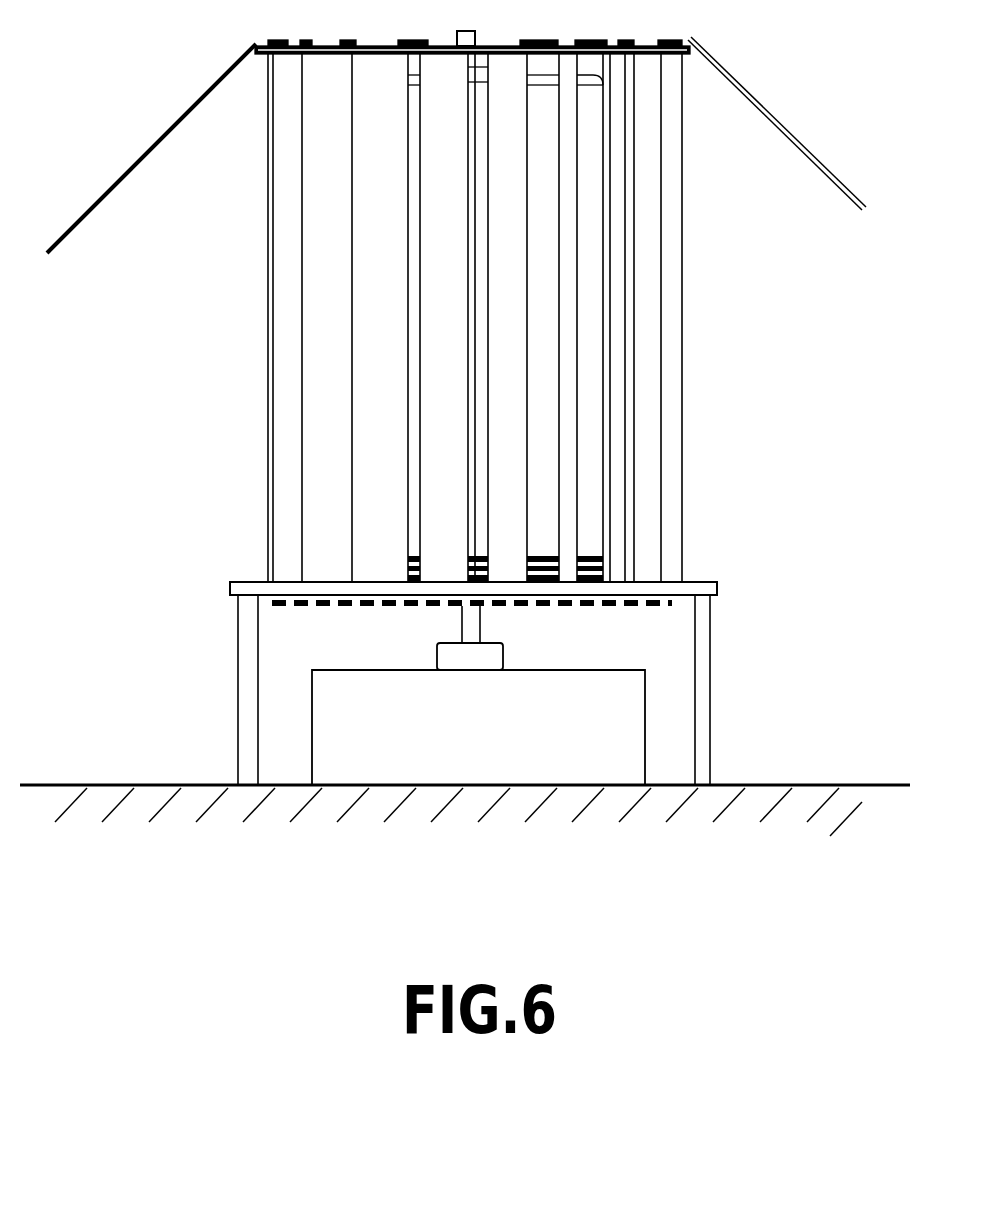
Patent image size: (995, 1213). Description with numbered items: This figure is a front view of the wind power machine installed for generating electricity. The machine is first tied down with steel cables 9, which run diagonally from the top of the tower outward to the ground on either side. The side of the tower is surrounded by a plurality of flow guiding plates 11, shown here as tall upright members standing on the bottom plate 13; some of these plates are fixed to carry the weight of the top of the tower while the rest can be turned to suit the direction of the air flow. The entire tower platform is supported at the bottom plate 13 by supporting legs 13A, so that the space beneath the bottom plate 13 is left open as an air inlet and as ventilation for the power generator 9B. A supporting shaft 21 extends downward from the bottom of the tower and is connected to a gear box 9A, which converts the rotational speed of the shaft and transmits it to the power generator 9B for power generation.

The steel cables 9 is at (128, 163).
The gear box 9A is at (447, 654).
The power generator 9B is at (628, 683).
The flow guiding plates 11 is at (672, 320).
The bottom plate 13 is at (663, 590).
The supporting legs 13A is at (700, 671).
The supporting shaft 21 is at (478, 628).